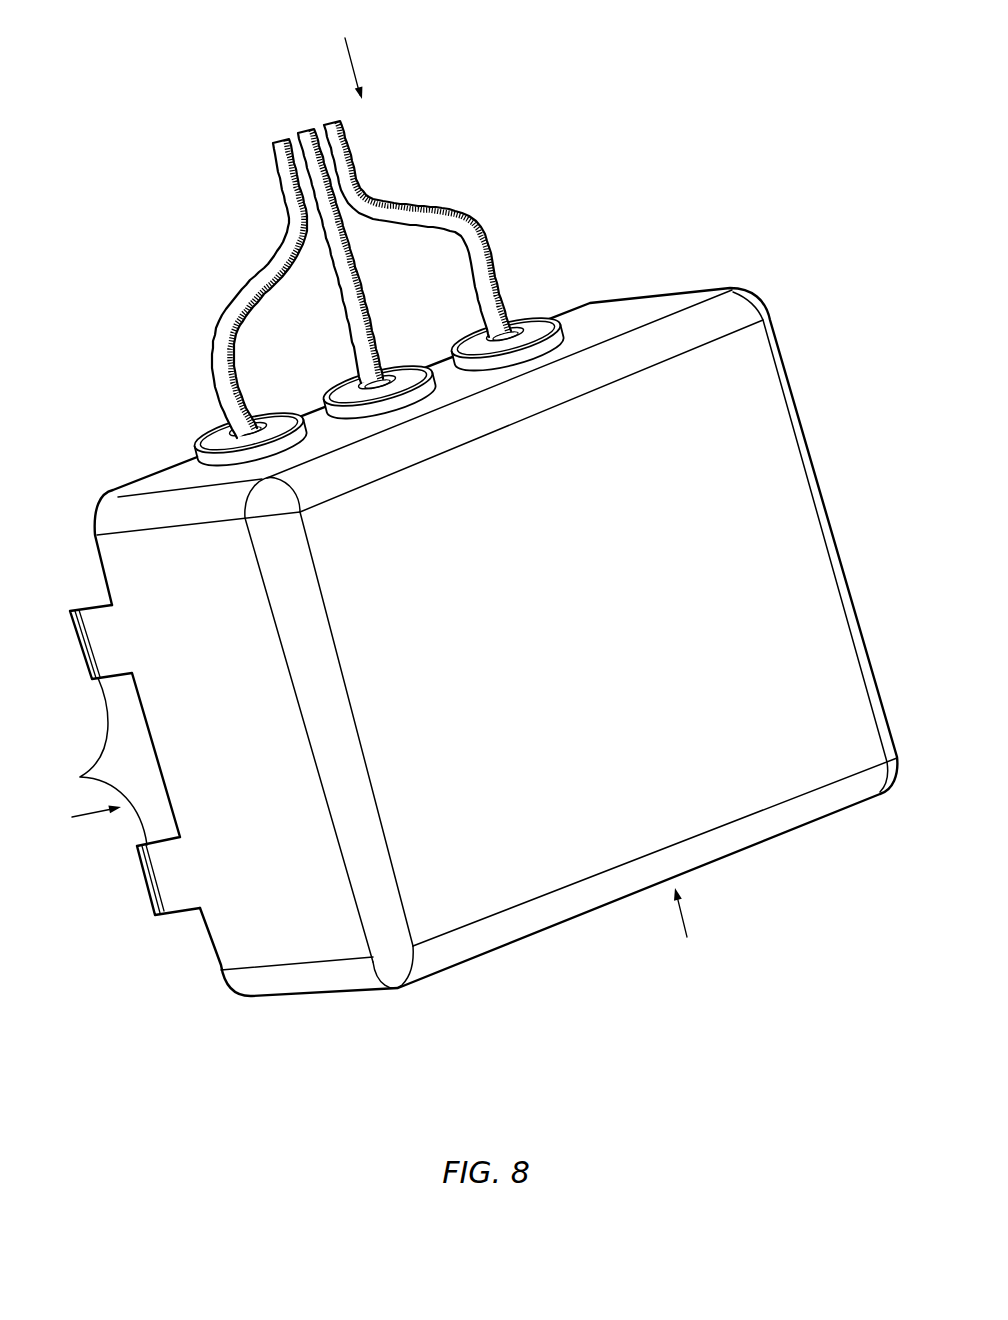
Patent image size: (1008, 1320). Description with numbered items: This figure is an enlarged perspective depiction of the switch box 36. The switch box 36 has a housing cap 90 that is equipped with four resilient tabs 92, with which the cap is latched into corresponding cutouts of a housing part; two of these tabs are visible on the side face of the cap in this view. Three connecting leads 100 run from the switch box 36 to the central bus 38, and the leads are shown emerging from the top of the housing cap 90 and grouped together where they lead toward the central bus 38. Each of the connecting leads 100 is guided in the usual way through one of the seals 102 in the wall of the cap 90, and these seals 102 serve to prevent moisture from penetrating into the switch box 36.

The switch box 36 is at (469, 531).
The central bus 38 is at (335, 232).
The housing cap 90 is at (496, 642).
The resilient tabs 92 is at (81, 777).
The connecting leads 100 is at (217, 327).
The seals 102 is at (268, 413).